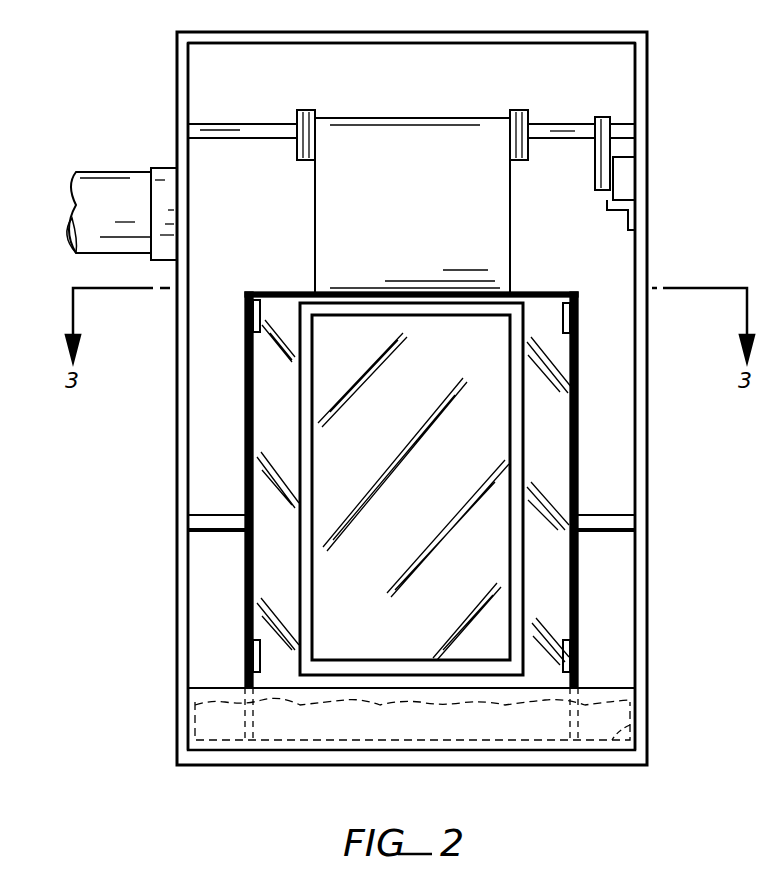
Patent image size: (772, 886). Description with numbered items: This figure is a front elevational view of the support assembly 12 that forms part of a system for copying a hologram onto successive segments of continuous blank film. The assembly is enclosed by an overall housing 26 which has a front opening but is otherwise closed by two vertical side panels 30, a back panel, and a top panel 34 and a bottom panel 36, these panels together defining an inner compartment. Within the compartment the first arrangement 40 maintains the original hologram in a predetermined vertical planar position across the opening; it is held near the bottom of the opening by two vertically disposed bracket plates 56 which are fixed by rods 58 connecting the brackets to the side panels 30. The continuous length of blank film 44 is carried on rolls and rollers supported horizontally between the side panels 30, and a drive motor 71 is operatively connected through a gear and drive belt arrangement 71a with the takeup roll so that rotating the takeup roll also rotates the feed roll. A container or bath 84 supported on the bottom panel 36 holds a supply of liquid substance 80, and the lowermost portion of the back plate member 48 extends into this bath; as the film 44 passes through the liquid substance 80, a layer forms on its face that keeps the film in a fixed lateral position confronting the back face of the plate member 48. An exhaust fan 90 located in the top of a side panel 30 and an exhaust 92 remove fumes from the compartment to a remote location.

The support assembly 12 is at (124, 675).
The housing 26 is at (648, 74).
The vertical side panels 30 is at (180, 475).
The top panel 34 is at (515, 37).
The bottom panel 36 is at (282, 760).
The first arrangement 40 is at (492, 341).
The film 44 is at (378, 132).
The back plate member 48 is at (278, 303).
The bracket plates 56 is at (245, 405).
The rods 58 is at (215, 533).
The drive motor 71 is at (628, 178).
The gear and drive belt arrangement 71a is at (597, 160).
The liquid substance 80 is at (417, 702).
The container or bath 84 is at (612, 740).
The exhaust fan 90 is at (165, 172).
The exhaust 92 is at (90, 190).